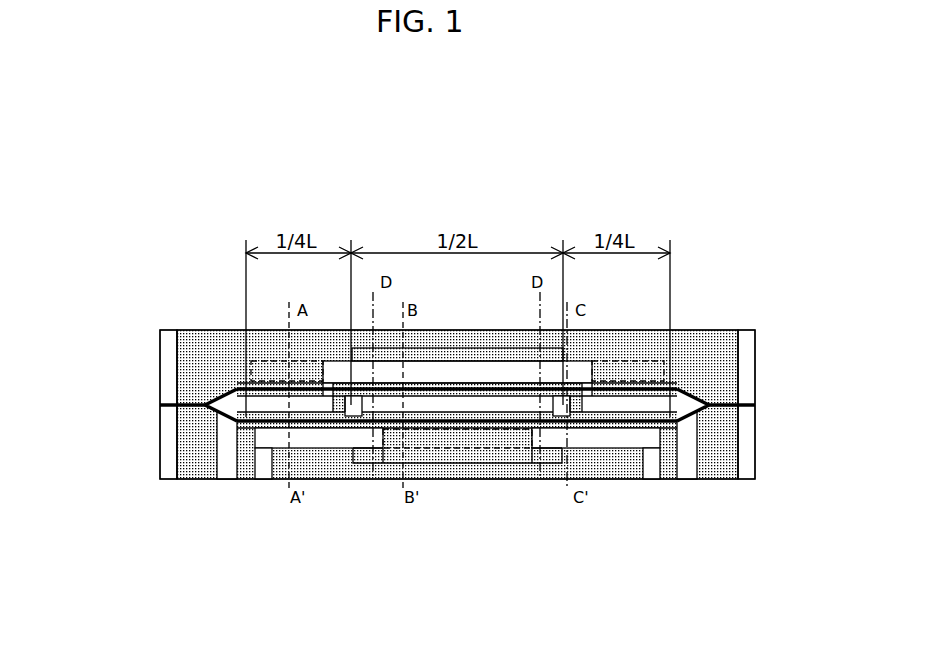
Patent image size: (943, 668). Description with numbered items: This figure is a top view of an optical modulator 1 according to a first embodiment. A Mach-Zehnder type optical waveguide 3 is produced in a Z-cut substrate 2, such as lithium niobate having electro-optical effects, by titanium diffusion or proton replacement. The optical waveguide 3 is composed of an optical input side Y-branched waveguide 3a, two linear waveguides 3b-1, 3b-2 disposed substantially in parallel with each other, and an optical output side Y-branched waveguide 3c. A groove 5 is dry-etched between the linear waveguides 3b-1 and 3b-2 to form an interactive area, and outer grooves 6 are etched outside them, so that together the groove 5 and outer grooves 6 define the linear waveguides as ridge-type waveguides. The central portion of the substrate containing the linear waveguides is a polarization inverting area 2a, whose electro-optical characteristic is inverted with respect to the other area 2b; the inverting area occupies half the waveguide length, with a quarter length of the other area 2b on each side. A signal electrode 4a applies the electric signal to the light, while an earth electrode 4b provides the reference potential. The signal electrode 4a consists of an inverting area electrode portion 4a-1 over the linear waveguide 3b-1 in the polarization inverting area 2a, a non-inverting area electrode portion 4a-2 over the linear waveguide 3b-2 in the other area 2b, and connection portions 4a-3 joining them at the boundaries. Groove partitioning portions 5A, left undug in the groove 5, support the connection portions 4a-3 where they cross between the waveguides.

The optical modulator 1 is at (692, 308).
The substrate 2 is at (614, 330).
The polarization inverting area 2a is at (472, 463).
The other area 2b is at (747, 460).
The Mach-Zehnder type optical waveguide 3 is at (166, 408).
The optical input side Y-branched waveguide 3a is at (232, 388).
The linear waveguide 3b-1 is at (260, 390).
The linear waveguide 3b-2 is at (262, 427).
The optical output side Y-branched waveguide 3c is at (707, 388).
The signal electrode 4a is at (247, 470).
The inverting area electrode portion 4a-1 is at (512, 368).
The non-inverting area electrode portion 4a-2 is at (318, 430).
The connection portion 4a-3 is at (352, 400).
The earth electrode 4b is at (514, 452).
The groove 5 is at (337, 402).
The groove partitioning portion 5A is at (378, 414).
The outer groove 6 is at (506, 356).